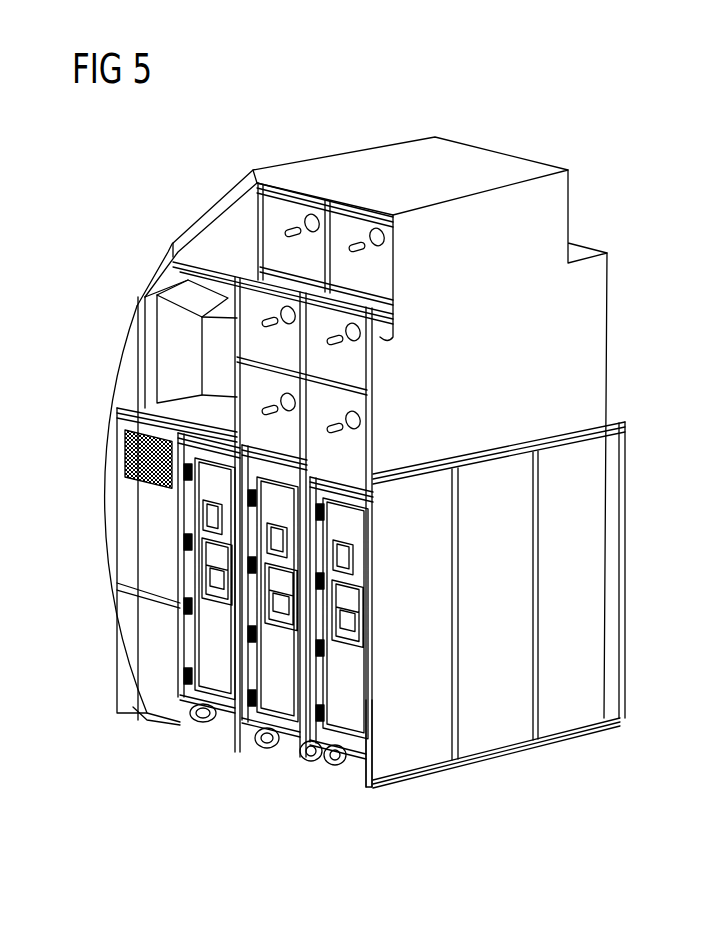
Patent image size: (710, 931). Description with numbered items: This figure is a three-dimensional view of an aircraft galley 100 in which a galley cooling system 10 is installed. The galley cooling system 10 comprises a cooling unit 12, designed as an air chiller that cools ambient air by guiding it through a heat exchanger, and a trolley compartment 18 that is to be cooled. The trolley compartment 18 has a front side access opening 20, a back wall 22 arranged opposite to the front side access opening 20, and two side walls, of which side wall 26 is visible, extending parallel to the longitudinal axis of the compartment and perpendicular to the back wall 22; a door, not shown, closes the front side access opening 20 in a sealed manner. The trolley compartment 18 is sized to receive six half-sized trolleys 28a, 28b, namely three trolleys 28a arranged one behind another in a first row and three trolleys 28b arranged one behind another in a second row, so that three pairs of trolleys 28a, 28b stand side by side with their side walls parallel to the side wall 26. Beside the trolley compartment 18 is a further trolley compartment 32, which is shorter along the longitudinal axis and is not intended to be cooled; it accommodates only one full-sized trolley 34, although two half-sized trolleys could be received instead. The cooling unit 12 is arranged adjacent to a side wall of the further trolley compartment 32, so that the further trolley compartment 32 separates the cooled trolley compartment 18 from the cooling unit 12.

The aircraft galley 100 is at (512, 127).
The galley cooling system 10 is at (618, 397).
The cooling unit 12 is at (130, 527).
The trolley compartment 18 is at (407, 748).
The front side access opening 20 is at (350, 730).
The back wall 22 is at (613, 478).
The side wall 26 is at (570, 700).
The half-sized trolley 28a is at (263, 708).
The half-sized trolley 28b is at (330, 738).
The further trolley compartment 32 is at (182, 412).
The full-sized trolley 34 is at (225, 688).